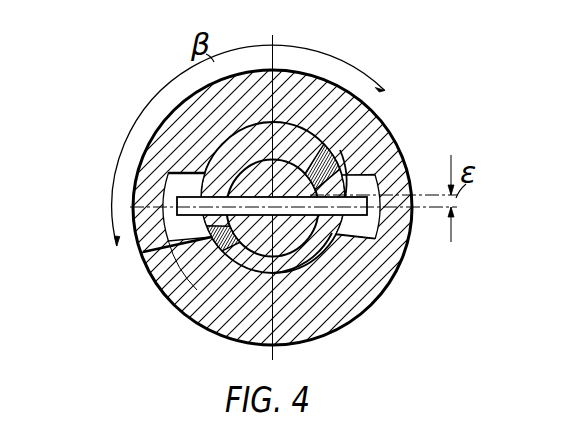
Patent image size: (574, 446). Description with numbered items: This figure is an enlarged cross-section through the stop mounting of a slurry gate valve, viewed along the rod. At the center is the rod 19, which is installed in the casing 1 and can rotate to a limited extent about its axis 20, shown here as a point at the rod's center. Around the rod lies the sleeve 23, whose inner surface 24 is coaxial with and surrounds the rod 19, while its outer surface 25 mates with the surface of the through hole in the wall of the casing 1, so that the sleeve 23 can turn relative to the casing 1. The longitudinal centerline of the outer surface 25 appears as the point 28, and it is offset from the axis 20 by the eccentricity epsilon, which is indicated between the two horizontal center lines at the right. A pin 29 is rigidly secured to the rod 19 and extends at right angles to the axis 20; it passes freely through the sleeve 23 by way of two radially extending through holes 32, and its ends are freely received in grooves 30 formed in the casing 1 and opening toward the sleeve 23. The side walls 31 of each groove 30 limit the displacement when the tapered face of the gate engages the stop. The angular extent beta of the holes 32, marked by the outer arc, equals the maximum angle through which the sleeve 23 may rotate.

The casing 1 is at (382, 262).
The rod 19 is at (225, 155).
The axis of the rod 20 is at (197, 290).
The sleeve 23 is at (372, 170).
The inner surface of the sleeve 24 is at (332, 233).
The outer surface of the sleeve 25 is at (340, 150).
The point designating centerline of the outer surface 28 is at (268, 194).
The pin 29 is at (162, 196).
The groove 30 is at (172, 172).
The side walls of the groove 31 is at (143, 250).
The radially extending through holes 32 is at (310, 150).